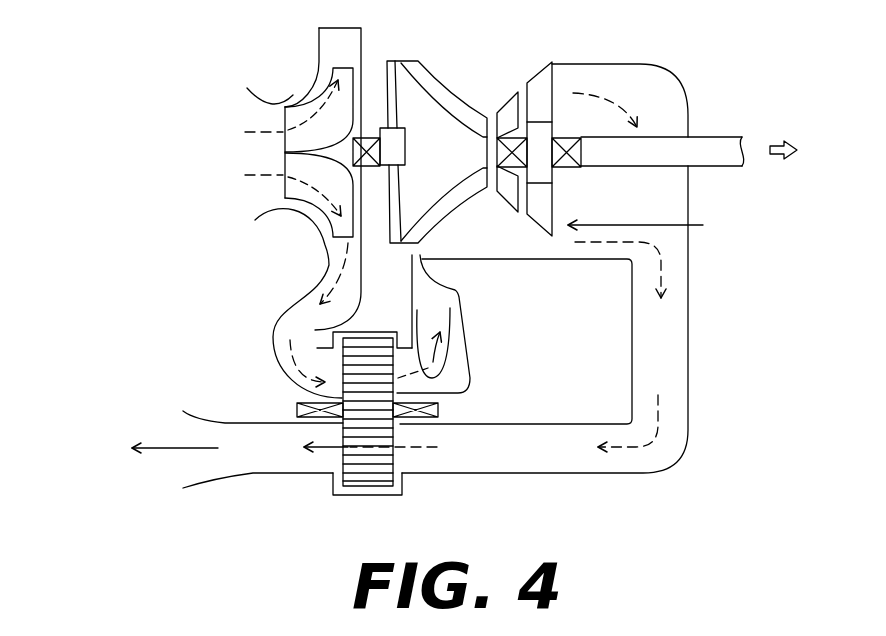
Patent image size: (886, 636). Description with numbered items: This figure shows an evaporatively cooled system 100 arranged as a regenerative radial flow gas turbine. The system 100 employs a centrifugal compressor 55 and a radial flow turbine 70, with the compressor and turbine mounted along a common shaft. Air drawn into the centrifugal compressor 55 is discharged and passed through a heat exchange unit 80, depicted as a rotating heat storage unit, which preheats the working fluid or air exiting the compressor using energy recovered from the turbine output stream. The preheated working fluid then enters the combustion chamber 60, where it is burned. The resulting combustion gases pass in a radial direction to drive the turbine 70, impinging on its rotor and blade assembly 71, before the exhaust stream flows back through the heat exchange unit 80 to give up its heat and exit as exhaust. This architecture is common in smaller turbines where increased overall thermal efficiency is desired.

The evaporatively cooled system 100 is at (186, 130).
The centrifugal compressor 55 is at (266, 151).
The radial flow turbine 70 is at (467, 84).
The rotor and blade assembly 71 is at (430, 82).
The combustion chamber 60 is at (442, 316).
The heat exchange unit 80 is at (402, 454).